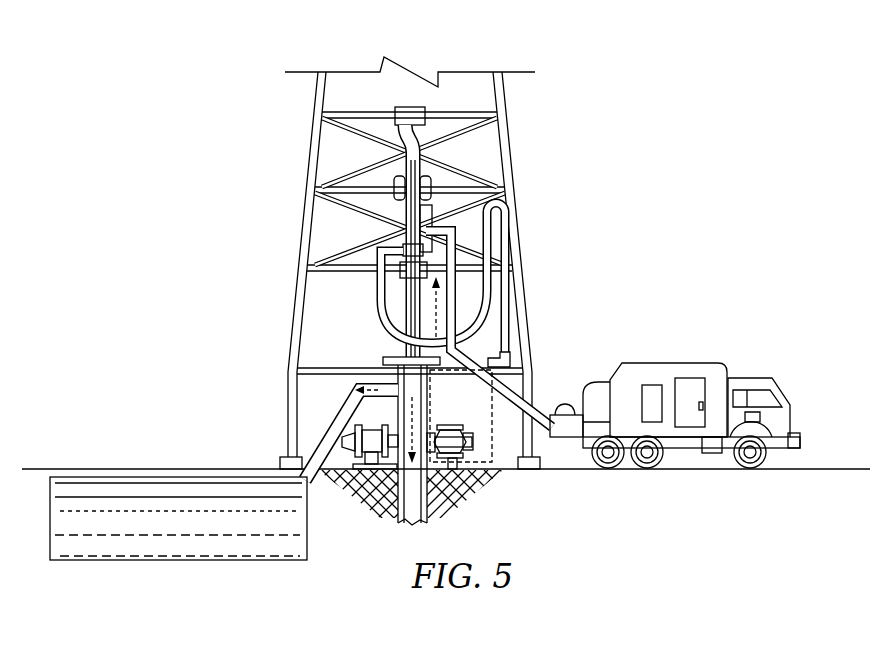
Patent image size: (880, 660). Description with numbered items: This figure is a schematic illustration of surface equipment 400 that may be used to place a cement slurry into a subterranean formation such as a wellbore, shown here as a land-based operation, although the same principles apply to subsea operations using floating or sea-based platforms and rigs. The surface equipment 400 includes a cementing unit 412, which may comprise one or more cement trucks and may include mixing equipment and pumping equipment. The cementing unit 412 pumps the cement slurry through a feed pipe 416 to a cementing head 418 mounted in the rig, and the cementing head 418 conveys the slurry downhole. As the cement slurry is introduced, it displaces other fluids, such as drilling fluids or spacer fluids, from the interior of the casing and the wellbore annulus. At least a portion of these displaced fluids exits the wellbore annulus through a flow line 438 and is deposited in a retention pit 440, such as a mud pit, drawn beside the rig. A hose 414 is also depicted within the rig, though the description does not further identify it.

The surface equipment 400 is at (268, 36).
The cementing unit 412 is at (680, 449).
The hose 414 is at (408, 298).
The feed pipe 416 is at (492, 404).
The cementing head 418 is at (447, 175).
The flow line 438 is at (320, 437).
The retention pit 440 is at (210, 560).